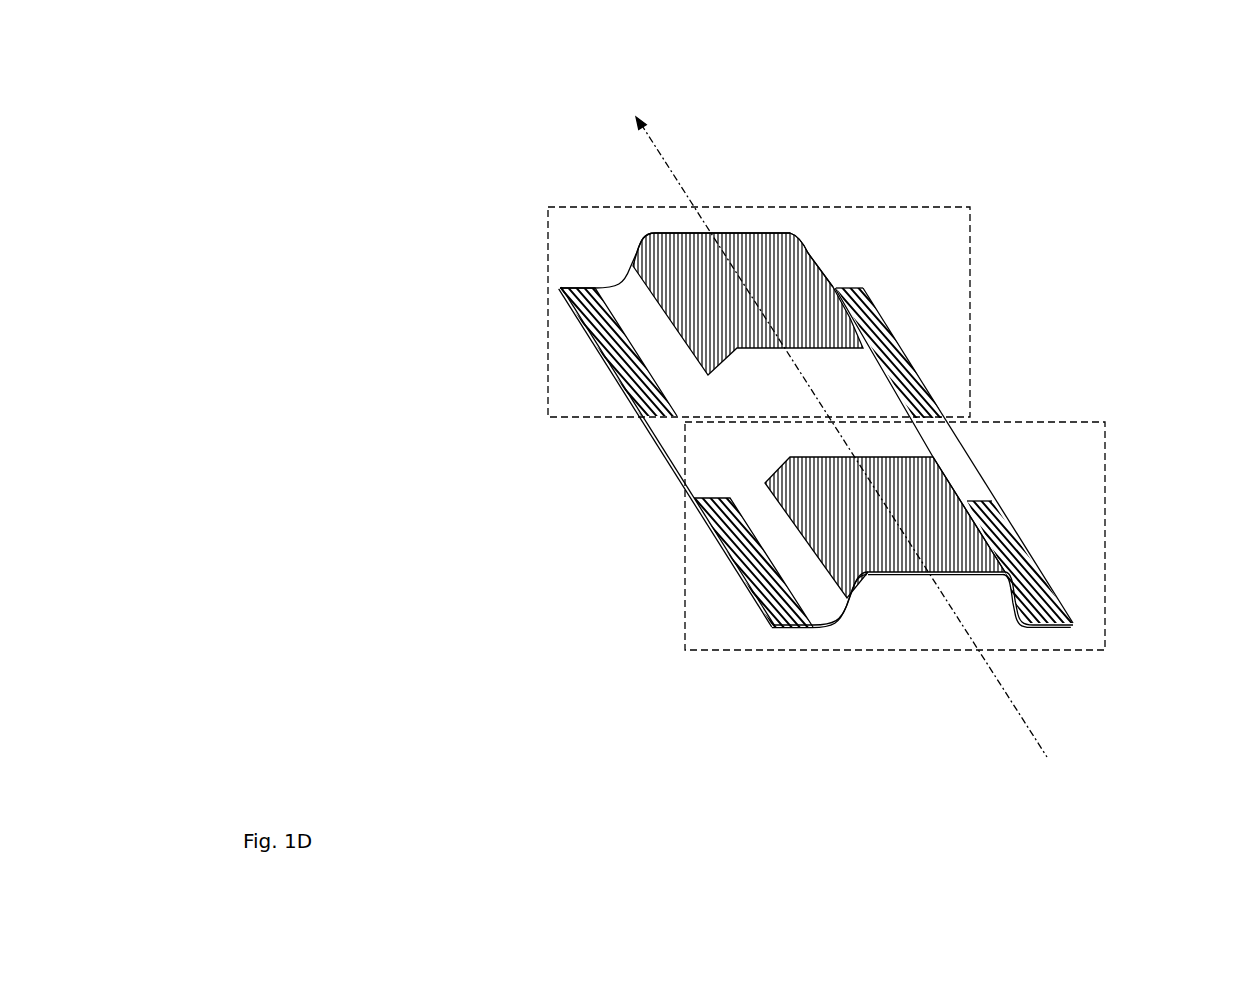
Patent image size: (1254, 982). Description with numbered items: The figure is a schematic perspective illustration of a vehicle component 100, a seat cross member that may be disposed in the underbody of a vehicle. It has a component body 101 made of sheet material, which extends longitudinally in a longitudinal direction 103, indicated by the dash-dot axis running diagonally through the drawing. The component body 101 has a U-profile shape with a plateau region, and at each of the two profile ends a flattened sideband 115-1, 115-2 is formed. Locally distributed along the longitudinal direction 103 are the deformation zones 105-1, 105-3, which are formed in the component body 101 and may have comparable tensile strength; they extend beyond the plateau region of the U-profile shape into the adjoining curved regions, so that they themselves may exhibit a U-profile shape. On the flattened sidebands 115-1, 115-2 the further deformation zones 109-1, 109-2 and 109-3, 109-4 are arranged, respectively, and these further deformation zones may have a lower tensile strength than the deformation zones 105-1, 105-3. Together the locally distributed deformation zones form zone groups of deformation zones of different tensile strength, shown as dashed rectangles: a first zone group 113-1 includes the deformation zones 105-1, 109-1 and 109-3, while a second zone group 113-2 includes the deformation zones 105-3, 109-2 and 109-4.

The vehicle component 100 is at (553, 122).
The component body 101 is at (673, 435).
The longitudinal direction 103 is at (865, 450).
The deformation zone 105-1 is at (797, 240).
The deformation zone 105-3 is at (933, 457).
The further deformation zone 109-1 is at (903, 360).
The further deformation zone 109-2 is at (1048, 598).
The further deformation zone 109-3 is at (560, 288).
The further deformation zone 109-4 is at (715, 535).
The first zone group 113-1 is at (969, 207).
The second zone group 113-2 is at (1105, 422).
The flattened sideband 115-1 is at (795, 626).
The flattened sideband 115-2 is at (1038, 626).